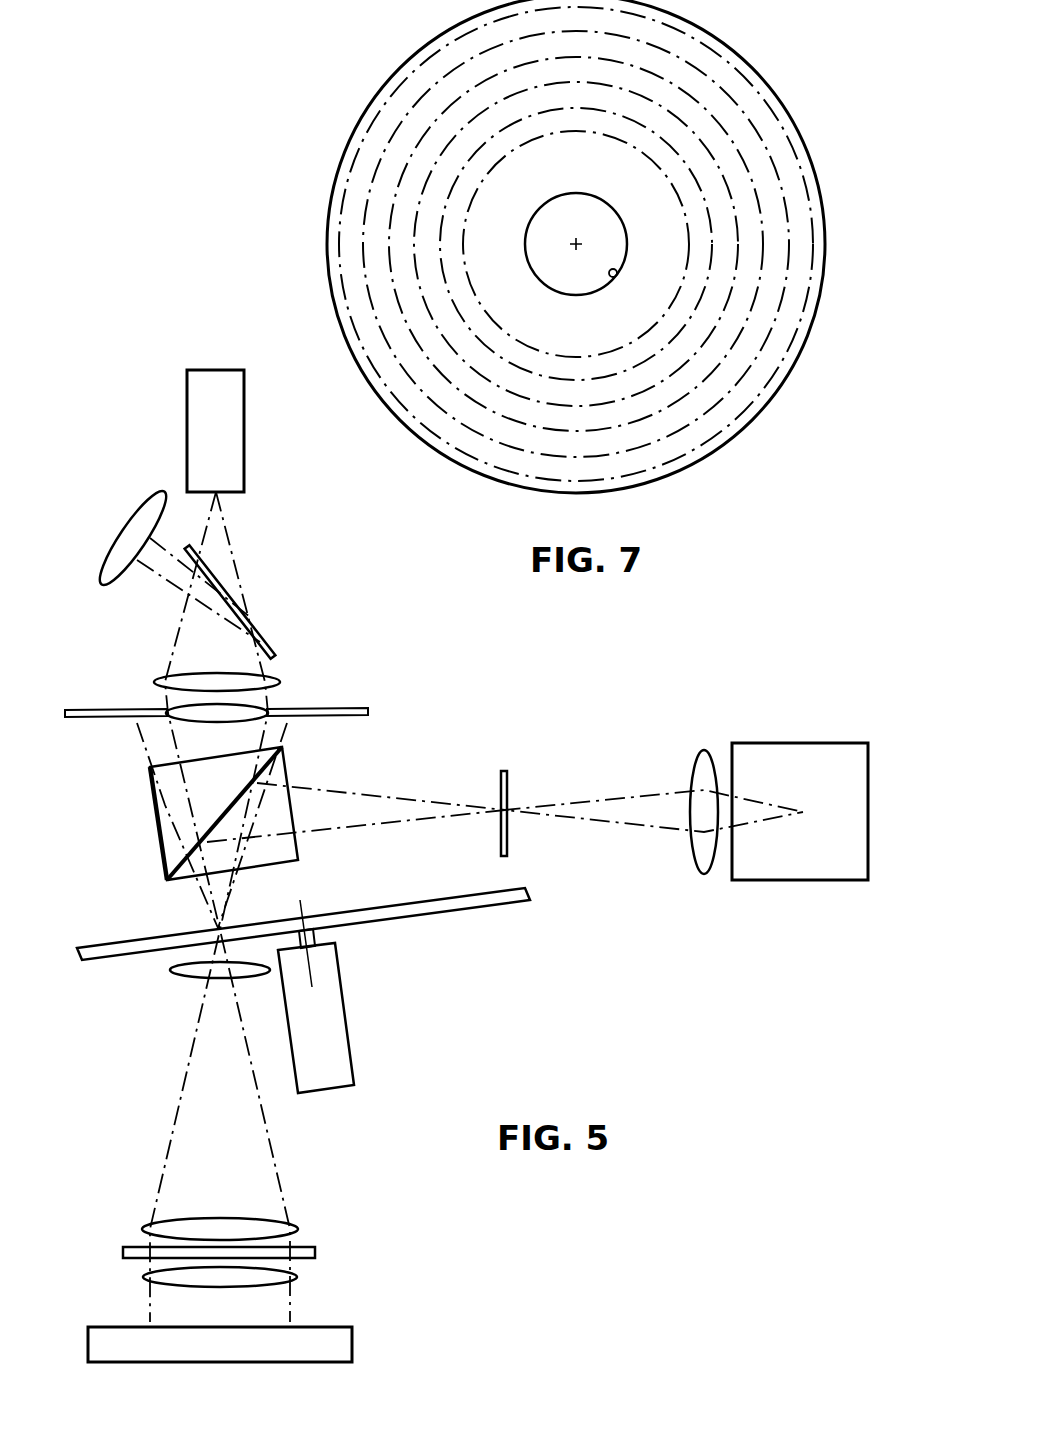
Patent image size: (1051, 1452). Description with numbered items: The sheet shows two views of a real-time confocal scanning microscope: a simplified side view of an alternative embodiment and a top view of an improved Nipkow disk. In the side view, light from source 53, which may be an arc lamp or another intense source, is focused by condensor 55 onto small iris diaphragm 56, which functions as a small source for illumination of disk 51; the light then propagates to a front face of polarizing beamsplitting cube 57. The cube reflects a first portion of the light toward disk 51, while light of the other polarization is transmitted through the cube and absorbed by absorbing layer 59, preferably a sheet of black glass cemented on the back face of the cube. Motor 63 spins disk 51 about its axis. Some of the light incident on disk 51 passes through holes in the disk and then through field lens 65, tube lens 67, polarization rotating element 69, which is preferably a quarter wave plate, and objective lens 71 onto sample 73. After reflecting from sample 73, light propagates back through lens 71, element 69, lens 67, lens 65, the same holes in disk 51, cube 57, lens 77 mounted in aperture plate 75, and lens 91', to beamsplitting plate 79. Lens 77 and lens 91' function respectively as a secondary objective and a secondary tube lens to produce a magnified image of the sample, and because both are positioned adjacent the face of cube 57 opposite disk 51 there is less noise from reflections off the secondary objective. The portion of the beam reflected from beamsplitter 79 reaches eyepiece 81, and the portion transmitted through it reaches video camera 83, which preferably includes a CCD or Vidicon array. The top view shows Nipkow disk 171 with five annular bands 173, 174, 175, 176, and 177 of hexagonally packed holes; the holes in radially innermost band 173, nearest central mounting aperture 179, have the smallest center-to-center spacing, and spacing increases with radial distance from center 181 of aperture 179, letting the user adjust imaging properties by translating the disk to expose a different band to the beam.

In FIG. 7, the Nipkow disk 171 is at (703, 468).
In FIG. 7, the annular band 173 is at (482, 160).
In FIG. 7, the annular band 174 is at (443, 170).
In FIG. 7, the annular band 175 is at (410, 185).
In FIG. 7, the annular band 176 is at (373, 223).
In FIG. 7, the annular band 177 is at (348, 262).
In FIG. 7, the central mounting aperture 179 is at (615, 276).
In FIG. 7, the center 181 is at (576, 244).
In FIG. 5, the Nipkow disk 51 is at (455, 913).
In FIG. 5, the source 53 is at (800, 742).
In FIG. 5, the condensor 55 is at (703, 877).
In FIG. 5, the iris diaphragm 56 is at (506, 793).
In FIG. 5, the polarizing beamsplitting cube 57 is at (190, 773).
In FIG. 5, the absorbing layer 59 is at (155, 838).
In FIG. 5, the motor 63 is at (347, 1040).
In FIG. 5, the field lens 65 is at (173, 975).
In FIG. 5, the tube lens 67 is at (290, 1230).
In FIG. 5, the polarization rotating element 69 is at (315, 1253).
In FIG. 5, the objective lens 71 is at (142, 1277).
In FIG. 5, the sample 73 is at (348, 1343).
In FIG. 5, the aperture plate 75 is at (67, 711).
In FIG. 5, the lens 77 is at (168, 711).
In FIG. 5, the beamsplitting plate 79 is at (225, 590).
In FIG. 5, the eyepiece 81 is at (118, 546).
In FIG. 5, the video camera 83 is at (187, 438).
In FIG. 5, the lens 91' is at (258, 668).